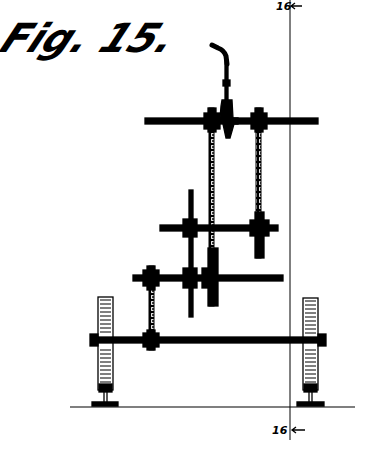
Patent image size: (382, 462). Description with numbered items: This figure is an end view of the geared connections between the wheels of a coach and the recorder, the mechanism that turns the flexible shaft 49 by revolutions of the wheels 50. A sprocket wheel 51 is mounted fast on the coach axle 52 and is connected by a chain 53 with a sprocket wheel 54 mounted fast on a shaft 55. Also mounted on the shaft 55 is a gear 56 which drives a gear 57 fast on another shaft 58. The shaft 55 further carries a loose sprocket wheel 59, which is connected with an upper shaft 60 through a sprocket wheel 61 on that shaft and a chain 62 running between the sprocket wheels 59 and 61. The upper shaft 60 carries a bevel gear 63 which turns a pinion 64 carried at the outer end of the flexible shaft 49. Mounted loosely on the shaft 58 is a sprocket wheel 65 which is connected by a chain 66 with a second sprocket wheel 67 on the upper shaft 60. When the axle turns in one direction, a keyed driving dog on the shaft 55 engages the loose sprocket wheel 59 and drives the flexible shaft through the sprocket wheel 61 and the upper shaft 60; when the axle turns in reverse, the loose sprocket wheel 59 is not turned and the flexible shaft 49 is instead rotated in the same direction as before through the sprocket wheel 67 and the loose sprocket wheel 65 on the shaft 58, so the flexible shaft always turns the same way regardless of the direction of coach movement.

The flexible shaft 49 is at (228, 58).
The wheels 50 is at (98, 321).
The sprocket wheel 51 is at (152, 352).
The coach axle 52 is at (240, 336).
The chain 53 is at (154, 302).
The sprocket wheel 54 is at (151, 266).
The shaft 55 is at (264, 275).
The gear 56 is at (197, 310).
The gear 57 is at (189, 197).
The shaft 58 is at (250, 222).
The loose sprocket wheel 59 is at (220, 292).
The upper shaft 60 is at (300, 118).
The sprocket wheel 61 is at (206, 110).
The chain 62 is at (207, 159).
The bevel gear 63 is at (236, 108).
The pinion 64 is at (225, 90).
The sprocket wheel 65 is at (255, 253).
The chain 66 is at (262, 154).
The second sprocket wheel 67 is at (262, 110).